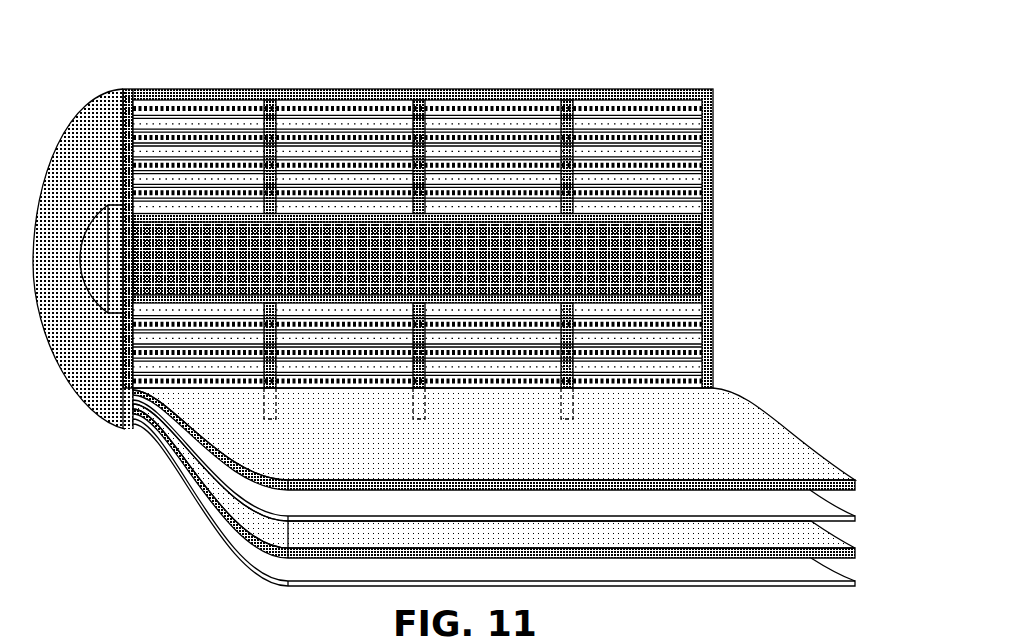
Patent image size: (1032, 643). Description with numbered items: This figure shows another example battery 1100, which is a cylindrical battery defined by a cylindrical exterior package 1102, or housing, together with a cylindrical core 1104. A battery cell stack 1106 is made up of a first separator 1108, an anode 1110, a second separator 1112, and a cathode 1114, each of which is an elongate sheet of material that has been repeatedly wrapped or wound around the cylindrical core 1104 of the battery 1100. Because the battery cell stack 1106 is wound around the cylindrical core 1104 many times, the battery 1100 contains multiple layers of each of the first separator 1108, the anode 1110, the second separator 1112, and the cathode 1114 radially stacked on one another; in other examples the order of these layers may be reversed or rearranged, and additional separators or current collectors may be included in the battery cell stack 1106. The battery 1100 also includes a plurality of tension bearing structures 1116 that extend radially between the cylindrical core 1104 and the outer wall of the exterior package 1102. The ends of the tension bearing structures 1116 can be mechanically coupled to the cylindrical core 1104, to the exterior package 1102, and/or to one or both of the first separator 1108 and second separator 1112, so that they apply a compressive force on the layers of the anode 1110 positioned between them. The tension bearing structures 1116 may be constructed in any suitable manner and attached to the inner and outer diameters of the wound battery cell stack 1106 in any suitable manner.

The battery 1100 is at (488, 313).
The exterior package 1102 is at (90, 100).
The cylindrical core 1104 is at (662, 250).
The battery cell stack 1106 is at (534, 487).
The first separator 1108 is at (849, 575).
The anode 1110 is at (849, 545).
The second separator 1112 is at (849, 511).
The cathode 1114 is at (849, 476).
The tension bearing structures 1116 is at (558, 84).